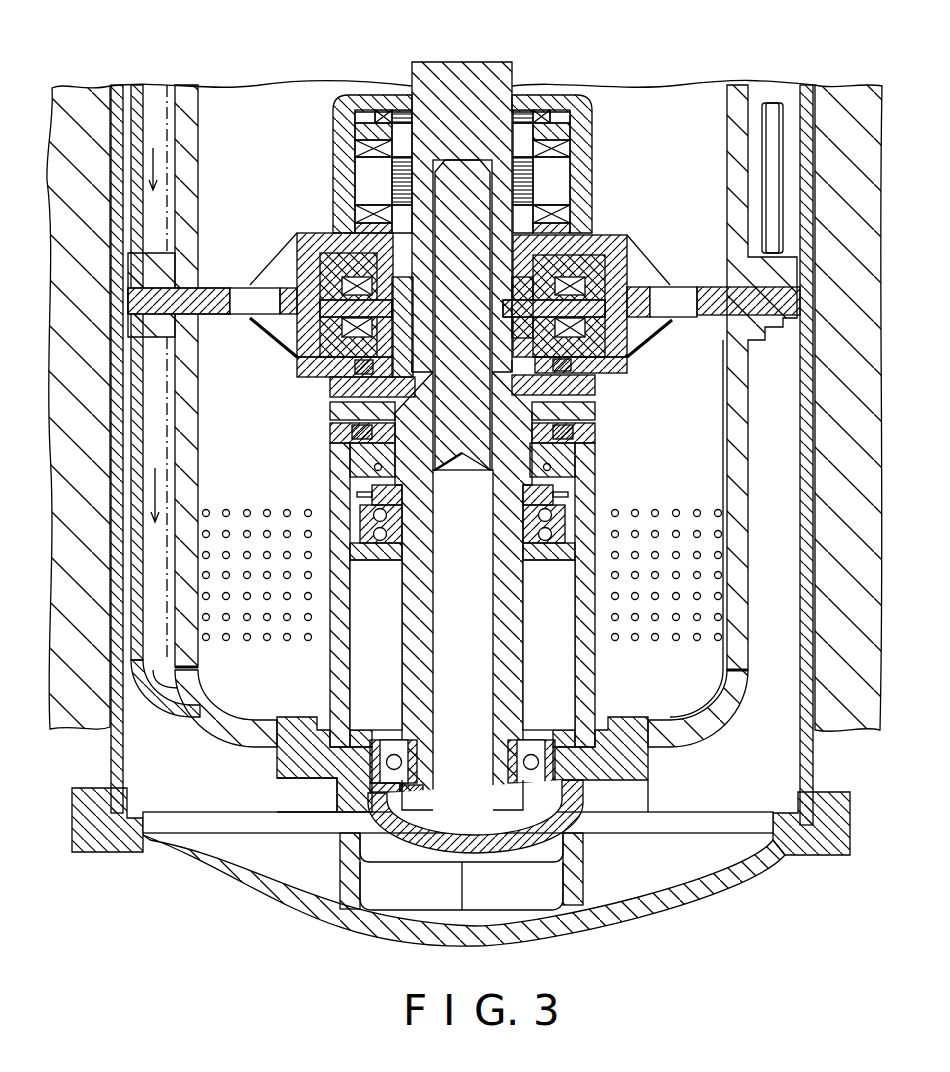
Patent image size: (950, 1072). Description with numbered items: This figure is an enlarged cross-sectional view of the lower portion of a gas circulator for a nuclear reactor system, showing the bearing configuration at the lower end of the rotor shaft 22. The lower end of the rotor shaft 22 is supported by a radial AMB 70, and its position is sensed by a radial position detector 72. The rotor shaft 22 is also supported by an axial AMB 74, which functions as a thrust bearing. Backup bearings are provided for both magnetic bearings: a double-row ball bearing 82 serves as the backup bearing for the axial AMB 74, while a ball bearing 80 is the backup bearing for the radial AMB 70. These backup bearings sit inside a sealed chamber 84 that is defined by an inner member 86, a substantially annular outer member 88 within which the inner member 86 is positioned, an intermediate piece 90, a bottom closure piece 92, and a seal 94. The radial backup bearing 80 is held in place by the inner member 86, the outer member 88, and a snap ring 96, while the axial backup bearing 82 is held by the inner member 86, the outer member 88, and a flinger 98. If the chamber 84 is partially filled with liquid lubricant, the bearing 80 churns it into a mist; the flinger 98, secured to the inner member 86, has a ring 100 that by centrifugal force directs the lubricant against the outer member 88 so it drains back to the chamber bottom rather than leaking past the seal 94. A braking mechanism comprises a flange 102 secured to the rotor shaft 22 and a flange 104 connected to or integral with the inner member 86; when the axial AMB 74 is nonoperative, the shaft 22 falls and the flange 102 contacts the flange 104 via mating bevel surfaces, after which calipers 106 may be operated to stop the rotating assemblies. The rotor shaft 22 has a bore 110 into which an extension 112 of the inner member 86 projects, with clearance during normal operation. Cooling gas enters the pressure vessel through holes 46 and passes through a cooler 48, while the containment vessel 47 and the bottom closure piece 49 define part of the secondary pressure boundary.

The rotor shaft 22 is at (482, 64).
The radial position detector 72 is at (542, 108).
The extension 112 is at (458, 188).
The radial AMB 70 is at (556, 164).
The axial AMB 74 is at (594, 270).
The bore 110 is at (434, 229).
The calipers 106 is at (320, 378).
The flange 102 is at (338, 388).
The flange 104 is at (335, 410).
The cooler 48 is at (216, 525).
The flinger 98 is at (350, 474).
The ring 100 is at (352, 493).
The intermediate piece 90 is at (597, 455).
The seal 94 is at (597, 490).
The double-row ball bearing 82 is at (535, 563).
The inner member 86 is at (516, 702).
The sealed chamber 84 is at (612, 682).
The outer member 88 is at (600, 697).
The holes 46 is at (192, 692).
The bottom closure piece 92 is at (355, 797).
The ball bearing 80 is at (600, 788).
The snap ring 96 is at (402, 796).
The bottom closure piece 49 is at (667, 904).
The containment vessel 47 is at (824, 775).